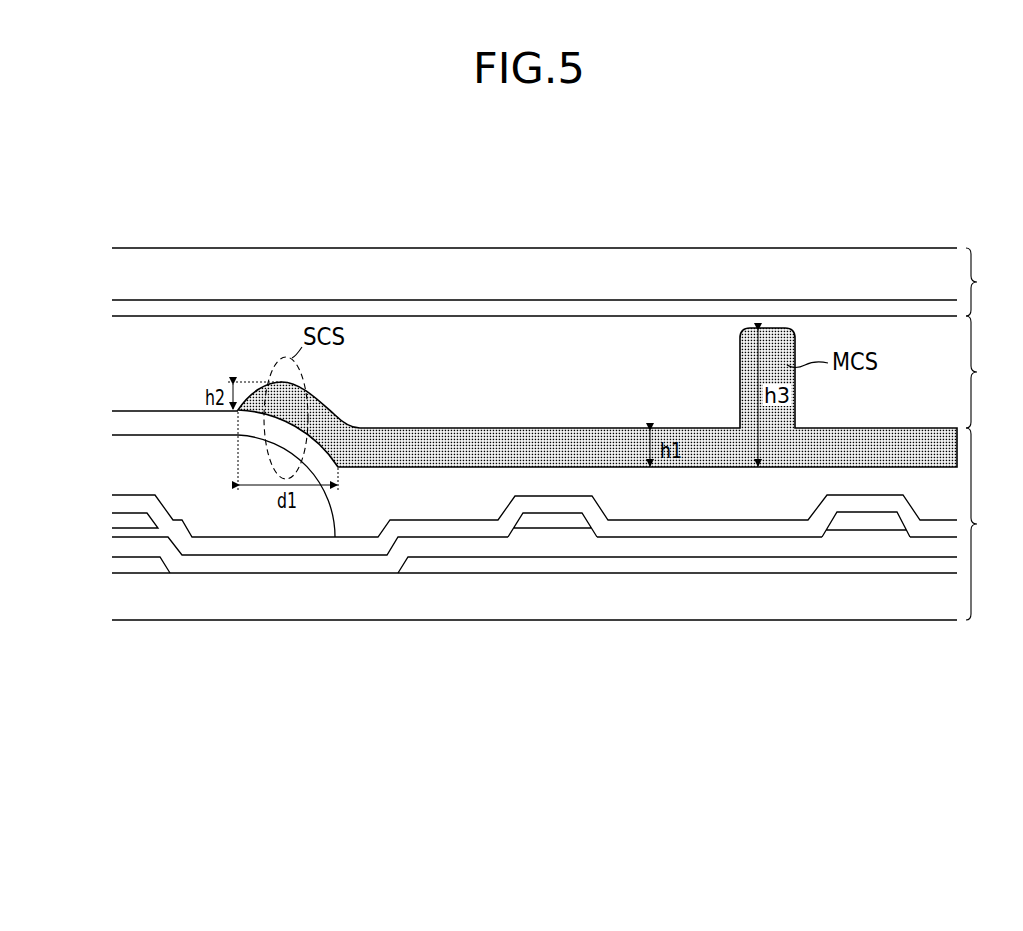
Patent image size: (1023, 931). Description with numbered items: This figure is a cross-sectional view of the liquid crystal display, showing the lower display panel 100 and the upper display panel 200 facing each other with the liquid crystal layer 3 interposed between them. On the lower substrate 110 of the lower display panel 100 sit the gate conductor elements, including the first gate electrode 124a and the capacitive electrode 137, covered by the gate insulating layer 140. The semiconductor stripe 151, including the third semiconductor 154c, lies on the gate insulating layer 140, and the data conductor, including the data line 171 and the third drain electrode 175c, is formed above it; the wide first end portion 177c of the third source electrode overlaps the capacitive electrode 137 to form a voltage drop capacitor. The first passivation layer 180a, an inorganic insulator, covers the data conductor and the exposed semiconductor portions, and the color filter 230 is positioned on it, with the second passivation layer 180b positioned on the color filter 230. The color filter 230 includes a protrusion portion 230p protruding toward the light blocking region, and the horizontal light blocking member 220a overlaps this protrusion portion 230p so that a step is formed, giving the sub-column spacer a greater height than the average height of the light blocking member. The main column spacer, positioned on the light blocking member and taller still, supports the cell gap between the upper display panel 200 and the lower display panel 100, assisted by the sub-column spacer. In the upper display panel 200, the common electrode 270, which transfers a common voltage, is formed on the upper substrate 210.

The upper substrate 210 is at (122, 271).
The common electrode 270 is at (122, 310).
The color filter 230 is at (122, 463).
The protrusion portion 230p is at (217, 505).
The horizontal light blocking member 220a is at (443, 452).
The first passivation layer 180a is at (347, 543).
The second passivation layer 180b is at (752, 497).
The wide first end portion of the third source electrode 177c is at (122, 521).
The gate insulating layer 140 is at (273, 565).
The third semiconductor 154c is at (538, 535).
The third drain electrode 175c is at (575, 522).
The semiconductor stripe 151 is at (848, 533).
The data line 171 is at (887, 522).
The capacitive electrode 137 is at (150, 565).
The first gate electrode 124a is at (665, 565).
The lower substrate 110 is at (122, 597).
The upper display panel 200 is at (992, 282).
The liquid crystal layer 3 is at (981, 372).
The lower display panel 100 is at (992, 524).